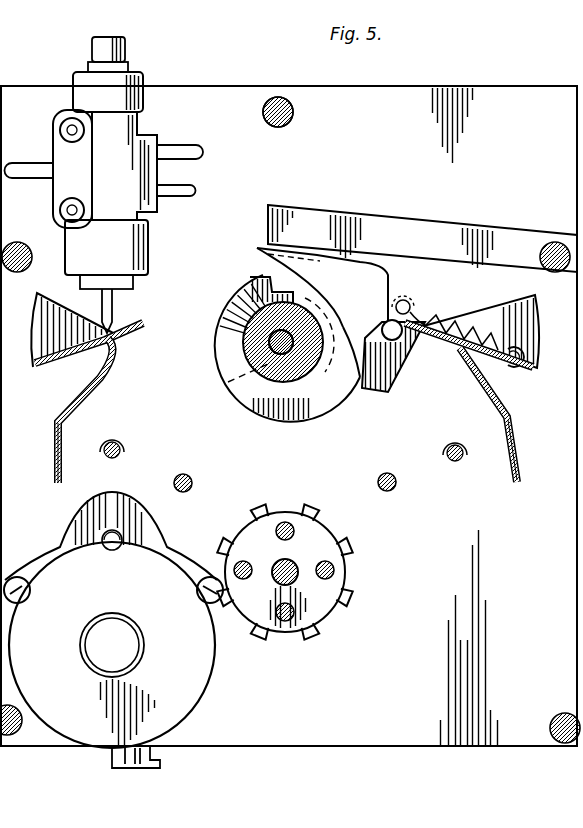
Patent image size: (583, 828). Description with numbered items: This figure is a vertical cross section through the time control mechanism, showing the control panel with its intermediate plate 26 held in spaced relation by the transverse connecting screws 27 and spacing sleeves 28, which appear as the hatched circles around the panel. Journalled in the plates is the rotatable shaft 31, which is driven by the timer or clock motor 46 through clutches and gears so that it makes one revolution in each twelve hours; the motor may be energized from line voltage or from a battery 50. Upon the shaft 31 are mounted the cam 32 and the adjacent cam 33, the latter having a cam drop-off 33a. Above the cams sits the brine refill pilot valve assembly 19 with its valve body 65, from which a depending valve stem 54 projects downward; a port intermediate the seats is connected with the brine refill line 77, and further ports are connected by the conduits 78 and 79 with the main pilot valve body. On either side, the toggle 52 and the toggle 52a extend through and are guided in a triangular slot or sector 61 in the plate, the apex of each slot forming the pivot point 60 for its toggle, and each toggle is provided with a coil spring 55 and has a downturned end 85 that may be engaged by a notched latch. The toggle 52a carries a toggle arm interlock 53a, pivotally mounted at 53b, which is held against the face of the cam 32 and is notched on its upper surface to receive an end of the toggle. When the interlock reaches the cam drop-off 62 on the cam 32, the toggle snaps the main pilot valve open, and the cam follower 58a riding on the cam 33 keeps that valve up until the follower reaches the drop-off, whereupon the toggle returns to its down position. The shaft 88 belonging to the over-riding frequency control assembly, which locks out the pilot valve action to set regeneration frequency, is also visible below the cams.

The brine refill pilot valve assembly 19 is at (125, 163).
The intermediate plate 26 is at (504, 142).
The transverse connecting screws 27 is at (287, 128).
The spacing sleeves 28 is at (295, 112).
The rotatable shaft 31 is at (279, 342).
The cam 32 is at (215, 350).
The cam 33 is at (322, 410).
The cam drop-off 33a is at (335, 290).
The timer or clock motor 46 is at (226, 676).
The battery 50 is at (162, 760).
The toggle 52 is at (112, 366).
The toggle 52a is at (472, 380).
The toggle arm interlock 53a is at (392, 375).
The pivot 53b is at (404, 298).
The valve stem 54 is at (112, 312).
The coil spring 55 is at (440, 322).
The cam follower 58a is at (420, 215).
The pivot point 60 is at (428, 345).
The triangular slot or sector 61 is at (40, 330).
The cam drop-off 62 is at (336, 388).
The valve body 65 is at (170, 112).
The brine refill line 77 is at (28, 164).
The conduit 78 is at (185, 147).
The conduit 79 is at (185, 187).
The downturned end 85 is at (54, 437).
The shaft 88 is at (290, 568).